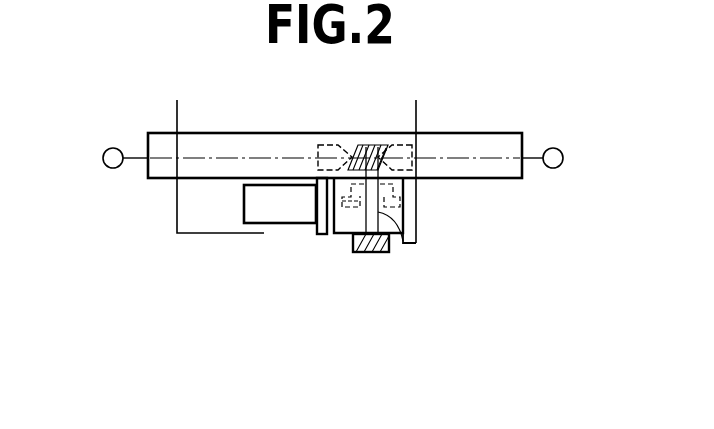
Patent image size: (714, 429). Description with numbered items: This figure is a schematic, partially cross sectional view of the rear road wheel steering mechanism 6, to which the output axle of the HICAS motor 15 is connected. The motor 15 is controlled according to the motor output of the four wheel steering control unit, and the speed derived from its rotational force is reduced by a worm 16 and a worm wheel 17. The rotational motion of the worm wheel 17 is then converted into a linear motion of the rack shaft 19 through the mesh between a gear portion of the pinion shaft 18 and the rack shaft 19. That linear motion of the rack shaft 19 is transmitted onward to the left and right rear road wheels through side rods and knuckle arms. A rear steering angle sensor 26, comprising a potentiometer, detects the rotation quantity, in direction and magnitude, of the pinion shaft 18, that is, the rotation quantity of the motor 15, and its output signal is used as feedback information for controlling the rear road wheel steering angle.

The rear road wheel steering mechanism 6 is at (494, 129).
The HICAS motor 15 is at (282, 223).
The worm 16 is at (348, 212).
The worm wheel 17 is at (403, 203).
The pinion shaft 18 is at (403, 241).
The rack shaft 19 is at (338, 143).
The rear steering angle sensor 26 is at (369, 252).